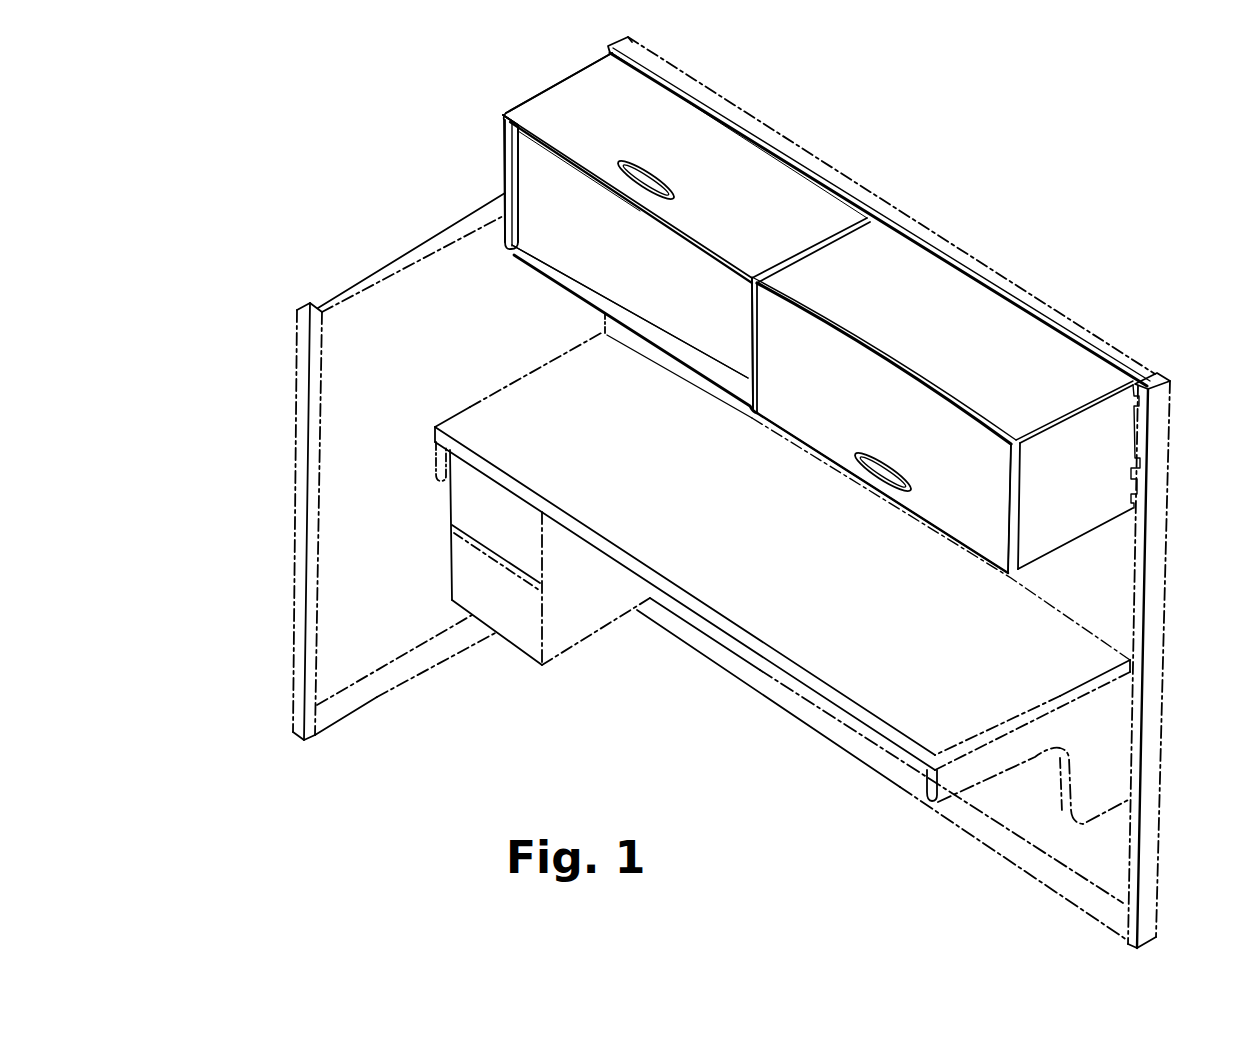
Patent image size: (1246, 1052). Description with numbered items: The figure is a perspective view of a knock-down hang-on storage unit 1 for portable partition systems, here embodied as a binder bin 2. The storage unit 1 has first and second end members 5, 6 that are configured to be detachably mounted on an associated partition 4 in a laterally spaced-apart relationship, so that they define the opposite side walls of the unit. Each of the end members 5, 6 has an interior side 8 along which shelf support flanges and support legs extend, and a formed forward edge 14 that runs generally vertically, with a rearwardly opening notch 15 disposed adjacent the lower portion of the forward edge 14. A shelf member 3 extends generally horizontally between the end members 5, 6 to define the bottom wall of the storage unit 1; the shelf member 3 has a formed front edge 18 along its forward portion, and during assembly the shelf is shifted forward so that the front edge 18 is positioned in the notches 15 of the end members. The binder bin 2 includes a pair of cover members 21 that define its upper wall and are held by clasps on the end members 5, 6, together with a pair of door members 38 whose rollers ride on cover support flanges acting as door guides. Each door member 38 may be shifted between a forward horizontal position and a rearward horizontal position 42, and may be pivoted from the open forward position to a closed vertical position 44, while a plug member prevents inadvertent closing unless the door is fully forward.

The knock-down hang-on storage unit 1 is at (288, 152).
The binder bin 2 is at (510, 143).
The shelf member 3 is at (573, 240).
The partition 4 is at (1168, 560).
The first end member 5 is at (1097, 450).
The second end member 6 is at (543, 170).
The interior sides 8 is at (530, 183).
The forward edges 14 is at (513, 167).
The notches 15 is at (548, 228).
The front edge 18 is at (573, 275).
The cover members 21 is at (907, 275).
The door members 38 is at (763, 183).
The rearward horizontal position 42 is at (690, 130).
The closed vertical position 44 is at (857, 423).